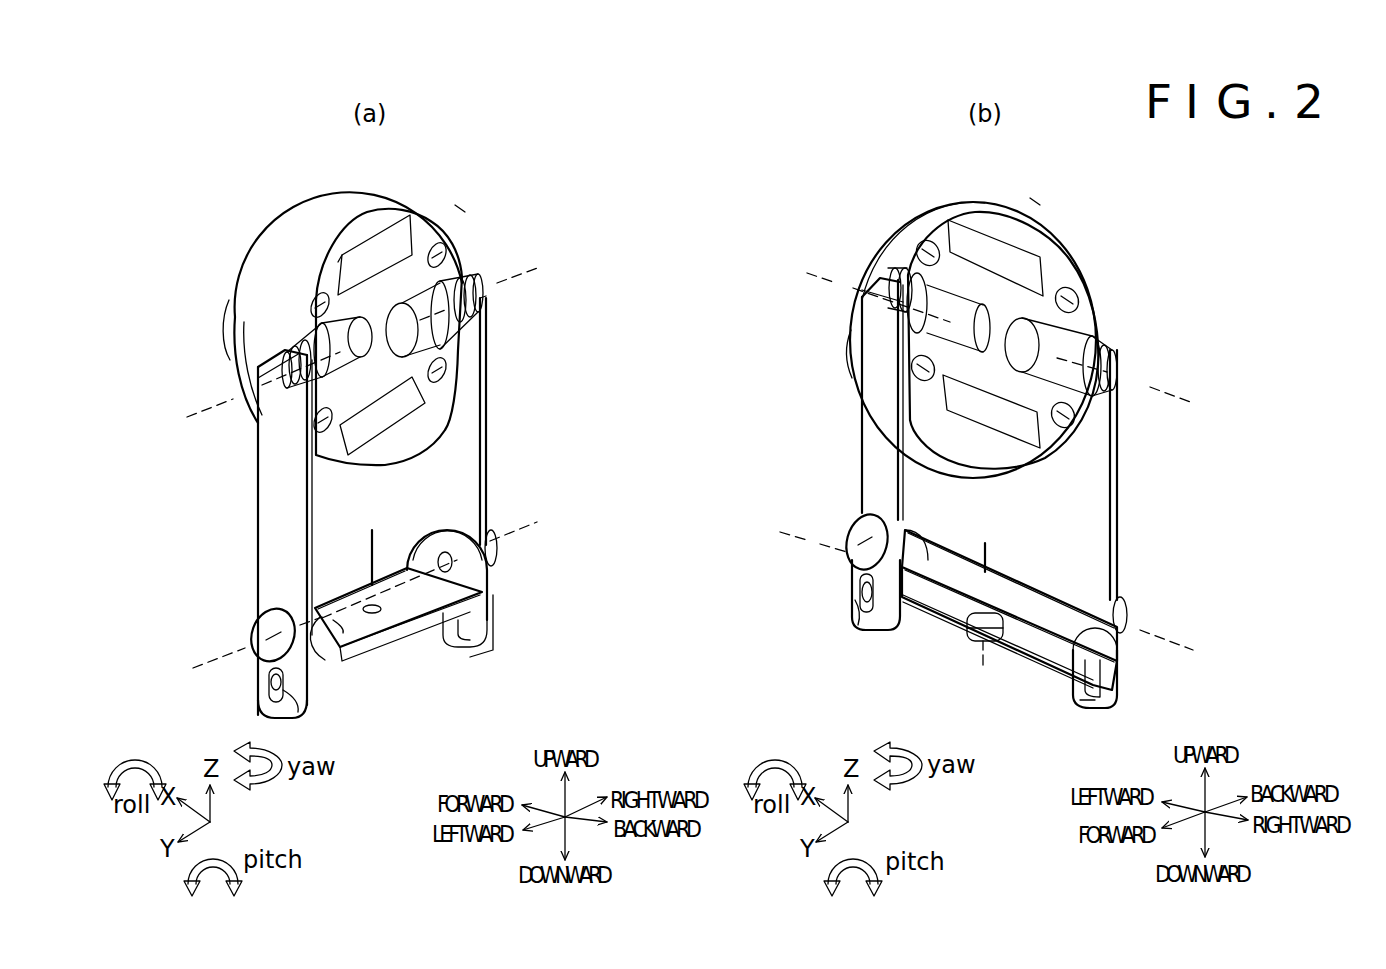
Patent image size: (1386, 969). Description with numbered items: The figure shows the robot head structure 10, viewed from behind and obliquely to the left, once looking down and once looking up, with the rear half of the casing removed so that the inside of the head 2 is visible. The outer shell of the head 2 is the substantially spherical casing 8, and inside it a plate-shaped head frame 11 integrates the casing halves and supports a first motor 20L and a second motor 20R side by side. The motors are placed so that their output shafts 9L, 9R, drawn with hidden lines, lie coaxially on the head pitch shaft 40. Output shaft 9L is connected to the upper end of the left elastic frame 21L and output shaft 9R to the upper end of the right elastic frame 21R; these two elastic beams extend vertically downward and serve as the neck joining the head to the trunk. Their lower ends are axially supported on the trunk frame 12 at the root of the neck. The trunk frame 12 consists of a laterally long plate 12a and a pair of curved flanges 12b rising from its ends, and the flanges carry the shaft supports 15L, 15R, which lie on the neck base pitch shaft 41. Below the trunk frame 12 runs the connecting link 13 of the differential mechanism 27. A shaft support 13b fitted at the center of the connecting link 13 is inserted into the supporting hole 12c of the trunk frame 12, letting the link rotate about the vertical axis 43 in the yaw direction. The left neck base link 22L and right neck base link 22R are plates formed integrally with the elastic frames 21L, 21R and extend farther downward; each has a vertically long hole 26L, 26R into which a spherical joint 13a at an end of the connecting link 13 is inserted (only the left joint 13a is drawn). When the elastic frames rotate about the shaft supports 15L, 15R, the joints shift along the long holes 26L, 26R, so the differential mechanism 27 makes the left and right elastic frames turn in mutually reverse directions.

The head 2 is at (413, 203).
The casing 8 is at (363, 180).
The output shaft 9L is at (345, 430).
The output shaft 9R is at (413, 430).
The head structure 10 is at (462, 205).
The head frame 11 is at (340, 262).
The trunk frame 12 is at (480, 730).
The plate 12a is at (417, 627).
The flange 12b is at (337, 627).
The supporting hole 12c is at (373, 605).
The connecting link 13 is at (937, 613).
The joint 13a is at (267, 678).
The shaft support 13b is at (993, 633).
The shaft support 15L is at (260, 613).
The shaft support 15R is at (487, 543).
The first motor 20L is at (297, 340).
The second motor 20R is at (467, 277).
The left elastic frame 21L is at (287, 497).
The right elastic frame 21R is at (488, 374).
The left neck base link 22L is at (263, 718).
The right neck base link 22R is at (480, 650).
The long hole 26L is at (293, 695).
The long hole 26R is at (487, 623).
The differential mechanism 27 is at (973, 655).
The head pitch shaft 40 is at (200, 406).
The neck base pitch shaft 41 is at (530, 525).
The axis 43 is at (370, 574).